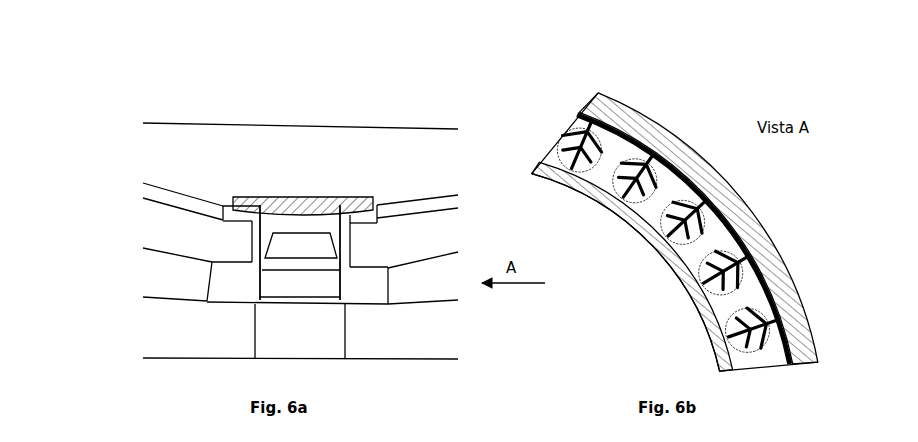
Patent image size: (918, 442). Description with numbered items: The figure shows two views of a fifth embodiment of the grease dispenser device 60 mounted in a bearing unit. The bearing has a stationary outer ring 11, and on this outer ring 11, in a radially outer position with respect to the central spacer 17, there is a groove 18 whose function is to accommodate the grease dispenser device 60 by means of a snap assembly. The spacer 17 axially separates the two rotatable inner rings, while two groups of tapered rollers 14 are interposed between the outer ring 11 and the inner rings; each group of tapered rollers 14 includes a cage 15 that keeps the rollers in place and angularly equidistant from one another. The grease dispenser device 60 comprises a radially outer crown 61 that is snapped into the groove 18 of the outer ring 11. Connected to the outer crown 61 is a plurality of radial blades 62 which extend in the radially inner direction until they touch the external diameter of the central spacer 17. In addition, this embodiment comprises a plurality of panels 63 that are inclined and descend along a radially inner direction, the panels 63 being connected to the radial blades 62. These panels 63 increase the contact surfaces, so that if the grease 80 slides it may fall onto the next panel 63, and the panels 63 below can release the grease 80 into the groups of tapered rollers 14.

In FIG. 6A, the stationary outer ring 11 is at (207, 132).
In FIG. 6B, the stationary outer ring 11 is at (657, 133).
In FIG. 6A, the groups of tapered rollers 14 is at (140, 250).
In FIG. 6A, the cage 15 is at (398, 240).
In FIG. 6A, the spacer 17 is at (302, 323).
In FIG. 6B, the spacer 17 is at (667, 242).
In FIG. 6A, the groove 18 is at (309, 139).
In FIG. 6B, the grease dispenser device 60 is at (681, 209).
In FIG. 6A, the radially outer crown 61 is at (323, 200).
In FIG. 6B, the radially outer crown 61 is at (693, 173).
In FIG. 6A, the radial blades 62 is at (277, 285).
In FIG. 6B, the radial blades 62 is at (665, 187).
In FIG. 6A, the panels 63 is at (310, 250).
In FIG. 6B, the panels 63 is at (773, 345).
In FIG. 6B, the grease 80 is at (720, 312).